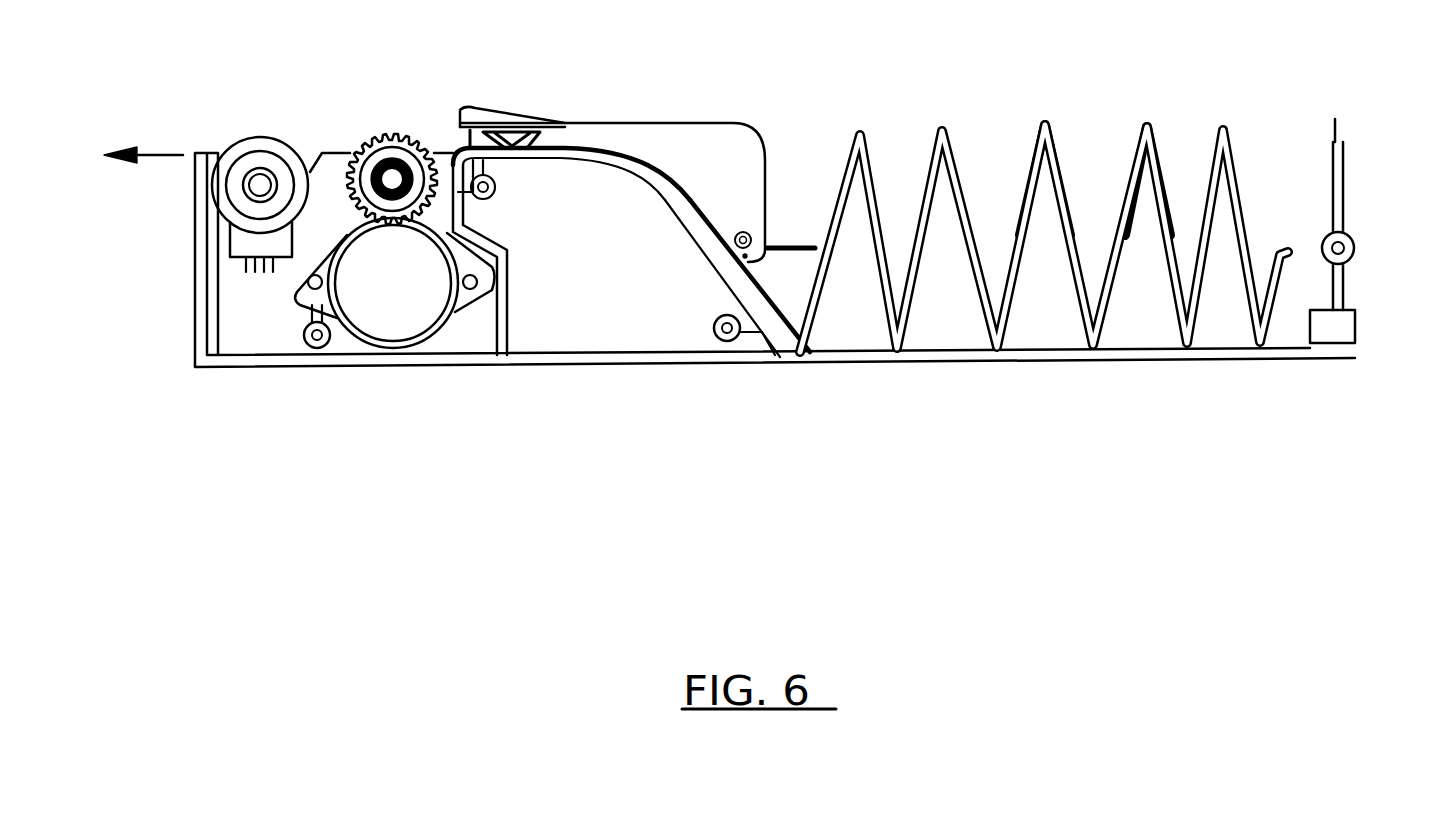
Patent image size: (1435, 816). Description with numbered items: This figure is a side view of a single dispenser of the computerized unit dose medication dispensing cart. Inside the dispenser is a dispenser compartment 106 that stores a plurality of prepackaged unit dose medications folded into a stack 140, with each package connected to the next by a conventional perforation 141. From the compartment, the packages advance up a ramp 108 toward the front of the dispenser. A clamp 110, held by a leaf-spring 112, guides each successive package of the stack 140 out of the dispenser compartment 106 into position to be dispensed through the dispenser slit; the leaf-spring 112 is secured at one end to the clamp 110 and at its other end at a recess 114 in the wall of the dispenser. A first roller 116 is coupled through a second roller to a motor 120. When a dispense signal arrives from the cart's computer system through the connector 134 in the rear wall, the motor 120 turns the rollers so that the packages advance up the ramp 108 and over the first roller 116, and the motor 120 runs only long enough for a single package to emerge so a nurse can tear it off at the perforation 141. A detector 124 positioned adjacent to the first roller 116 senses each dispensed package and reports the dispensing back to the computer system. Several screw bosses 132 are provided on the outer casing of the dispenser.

The dispenser compartment 106 is at (1133, 320).
The ramp 108 is at (803, 353).
The clamp 110 is at (658, 138).
The leaf-spring 112 is at (510, 129).
The recess 114 is at (780, 247).
The first roller 116 is at (386, 137).
The motor 120 is at (407, 315).
The detector 124 is at (245, 148).
The screw bosses 132 is at (318, 345).
The connector 134 is at (1338, 334).
The stack 140 is at (1147, 127).
The perforation 141 is at (1043, 128).